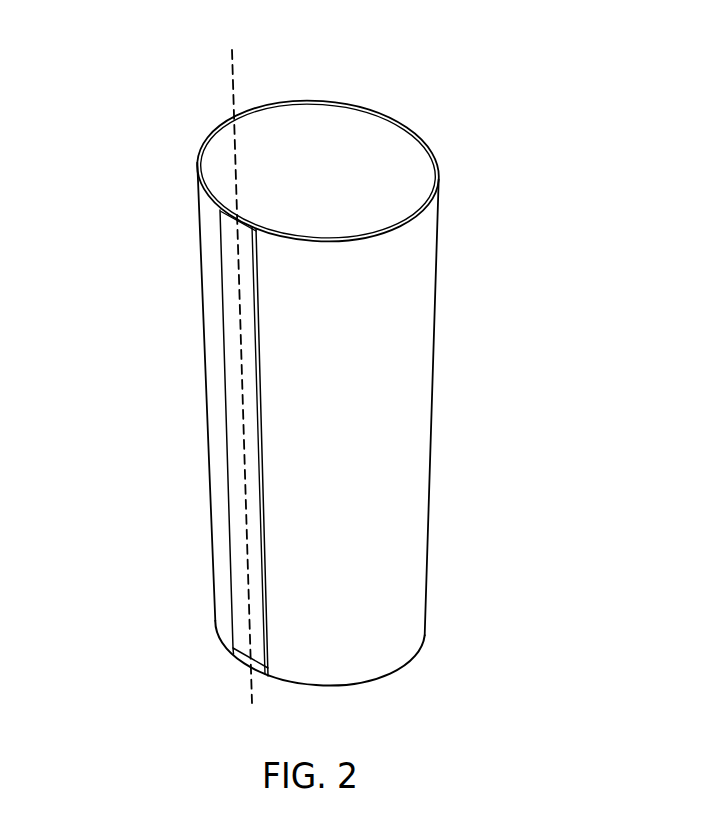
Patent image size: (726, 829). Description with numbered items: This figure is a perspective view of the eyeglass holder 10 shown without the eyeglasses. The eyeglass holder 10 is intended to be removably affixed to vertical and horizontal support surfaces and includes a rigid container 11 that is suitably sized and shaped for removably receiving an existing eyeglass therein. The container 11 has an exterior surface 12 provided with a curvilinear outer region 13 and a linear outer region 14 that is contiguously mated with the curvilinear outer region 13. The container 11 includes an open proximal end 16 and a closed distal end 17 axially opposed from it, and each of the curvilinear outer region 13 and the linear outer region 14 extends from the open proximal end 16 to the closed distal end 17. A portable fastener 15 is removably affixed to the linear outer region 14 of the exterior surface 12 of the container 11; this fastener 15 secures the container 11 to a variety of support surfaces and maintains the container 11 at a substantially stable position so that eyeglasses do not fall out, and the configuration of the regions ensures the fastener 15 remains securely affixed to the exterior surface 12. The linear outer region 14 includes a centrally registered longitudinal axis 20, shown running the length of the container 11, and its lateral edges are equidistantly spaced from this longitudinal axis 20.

The eyeglass holder 10 is at (562, 109).
The rigid container 11 is at (483, 364).
The exterior surface 12 is at (426, 502).
The curvilinear outer region 13 is at (398, 287).
The linear outer region 14 is at (236, 219).
The portable fastener 15 is at (211, 529).
The open proximal end 16 is at (205, 138).
The closed distal end 17 is at (393, 677).
The centrally registered longitudinal axis 20 is at (233, 78).